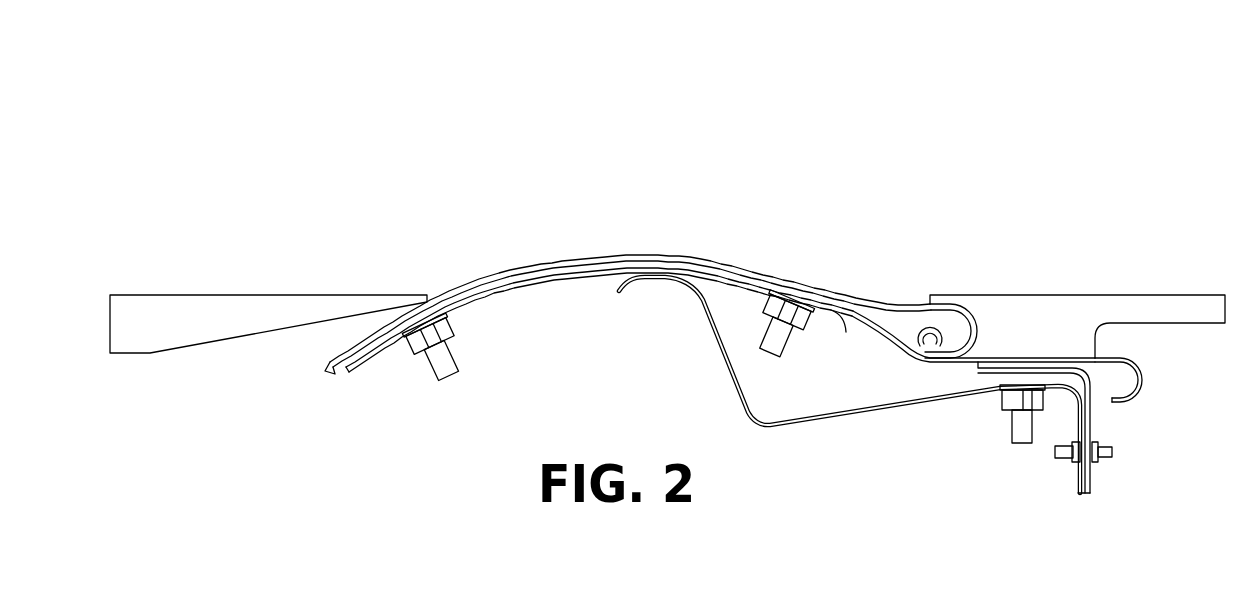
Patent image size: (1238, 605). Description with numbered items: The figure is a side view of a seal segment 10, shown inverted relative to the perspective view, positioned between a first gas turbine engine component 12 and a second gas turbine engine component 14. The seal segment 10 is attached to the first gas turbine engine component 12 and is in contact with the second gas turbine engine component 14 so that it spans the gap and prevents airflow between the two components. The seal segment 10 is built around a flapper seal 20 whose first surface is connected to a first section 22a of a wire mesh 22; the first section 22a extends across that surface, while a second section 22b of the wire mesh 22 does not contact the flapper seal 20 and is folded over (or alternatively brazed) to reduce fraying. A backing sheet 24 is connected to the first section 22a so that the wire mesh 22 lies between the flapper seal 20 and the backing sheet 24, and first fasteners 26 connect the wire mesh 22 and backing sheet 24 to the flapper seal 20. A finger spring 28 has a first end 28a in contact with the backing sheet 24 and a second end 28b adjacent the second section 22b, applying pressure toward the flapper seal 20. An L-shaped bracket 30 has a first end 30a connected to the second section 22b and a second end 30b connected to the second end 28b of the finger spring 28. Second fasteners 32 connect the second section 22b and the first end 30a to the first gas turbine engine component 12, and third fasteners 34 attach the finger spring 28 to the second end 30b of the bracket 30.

The seal segment 10 is at (528, 152).
The first gas turbine engine component 12 is at (1041, 312).
The second gas turbine engine component 14 is at (282, 308).
The flapper seal 20 is at (860, 300).
The wire mesh 22 is at (890, 360).
The first section of wire mesh 22a is at (331, 380).
The second section of wire mesh 22b is at (1104, 358).
The backing sheet 24 is at (500, 287).
The first fasteners 26 is at (427, 378).
The finger spring 28 is at (776, 436).
The first end of finger spring 28a is at (631, 292).
The second end of finger spring 28b is at (1078, 496).
The bracket 30 is at (1106, 417).
The first end of bracket 30a is at (976, 369).
The second end of bracket 30b is at (1092, 496).
The second fasteners 32 is at (1011, 456).
The third fasteners 34 is at (1114, 462).